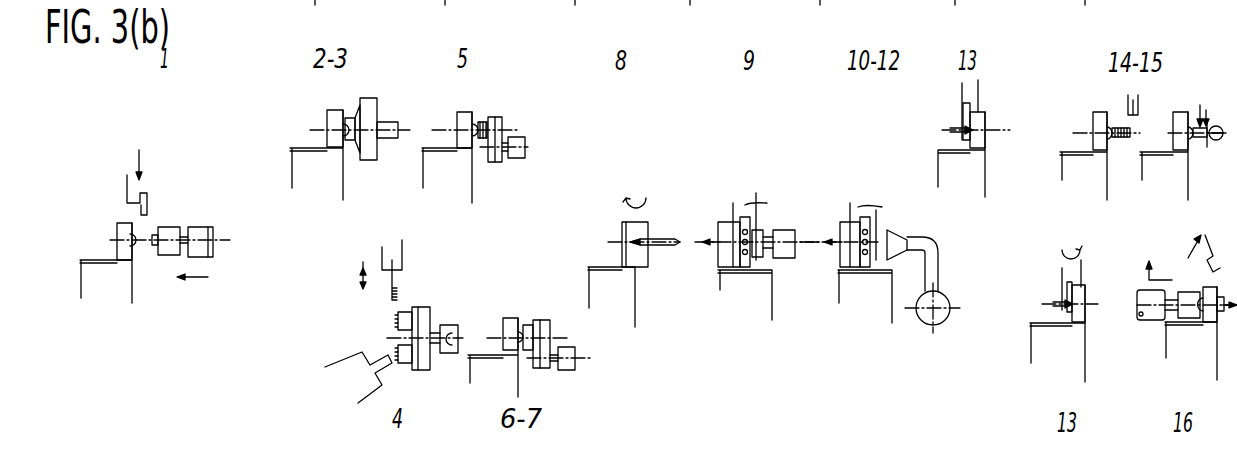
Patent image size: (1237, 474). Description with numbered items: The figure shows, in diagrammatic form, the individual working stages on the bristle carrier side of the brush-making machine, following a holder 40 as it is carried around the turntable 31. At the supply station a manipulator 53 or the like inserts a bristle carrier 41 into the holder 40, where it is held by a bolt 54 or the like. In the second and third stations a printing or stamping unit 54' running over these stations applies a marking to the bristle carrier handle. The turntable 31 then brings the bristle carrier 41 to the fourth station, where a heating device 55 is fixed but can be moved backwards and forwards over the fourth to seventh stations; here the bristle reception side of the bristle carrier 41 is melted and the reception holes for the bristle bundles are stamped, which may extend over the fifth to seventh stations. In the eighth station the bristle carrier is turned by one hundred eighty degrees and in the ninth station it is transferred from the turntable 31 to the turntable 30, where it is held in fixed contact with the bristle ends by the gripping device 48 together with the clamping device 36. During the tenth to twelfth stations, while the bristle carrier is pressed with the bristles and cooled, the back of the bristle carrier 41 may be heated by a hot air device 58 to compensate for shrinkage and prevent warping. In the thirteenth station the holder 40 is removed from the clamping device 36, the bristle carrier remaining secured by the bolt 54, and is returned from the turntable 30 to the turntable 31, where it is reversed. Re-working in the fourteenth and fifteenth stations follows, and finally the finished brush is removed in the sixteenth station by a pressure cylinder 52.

The turntable 30 is at (767, 295).
The turntable 31 is at (130, 297).
The clamping device 36 is at (728, 227).
The holder 40 is at (123, 230).
The bristle carrier 41 is at (153, 250).
The gripping device 48 is at (760, 205).
The pressure cylinder 52 is at (1150, 297).
The manipulator 53 is at (197, 230).
The bolt 54 is at (534, 147).
The printing or stamping unit 54' is at (384, 119).
The heating device 55 is at (497, 123).
The hot air device 58 is at (937, 257).